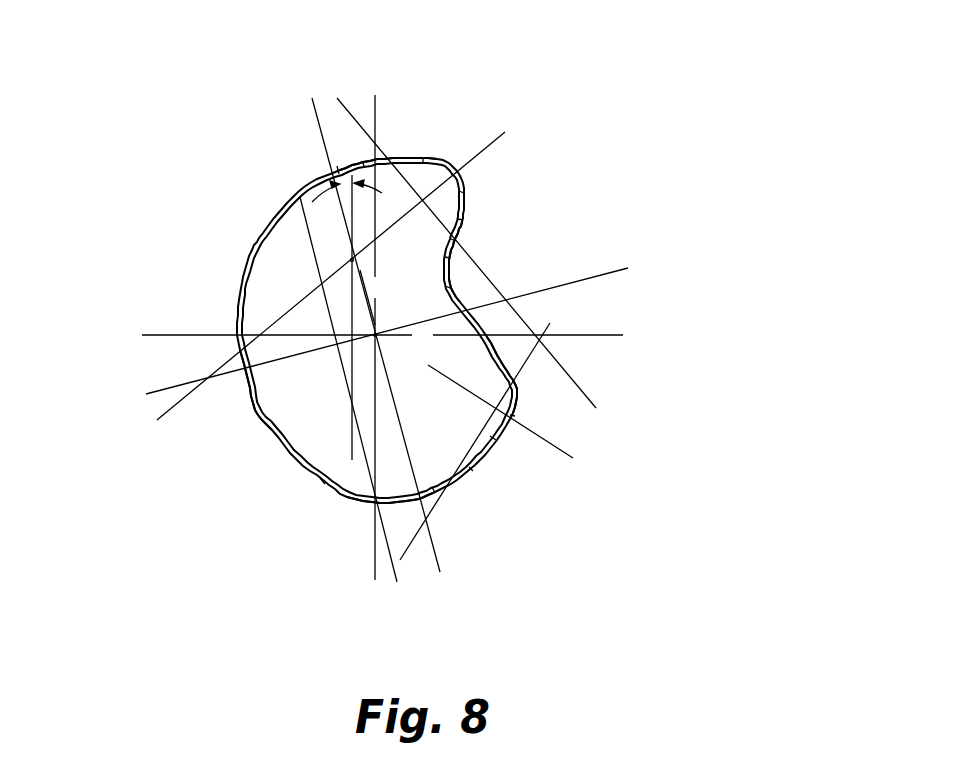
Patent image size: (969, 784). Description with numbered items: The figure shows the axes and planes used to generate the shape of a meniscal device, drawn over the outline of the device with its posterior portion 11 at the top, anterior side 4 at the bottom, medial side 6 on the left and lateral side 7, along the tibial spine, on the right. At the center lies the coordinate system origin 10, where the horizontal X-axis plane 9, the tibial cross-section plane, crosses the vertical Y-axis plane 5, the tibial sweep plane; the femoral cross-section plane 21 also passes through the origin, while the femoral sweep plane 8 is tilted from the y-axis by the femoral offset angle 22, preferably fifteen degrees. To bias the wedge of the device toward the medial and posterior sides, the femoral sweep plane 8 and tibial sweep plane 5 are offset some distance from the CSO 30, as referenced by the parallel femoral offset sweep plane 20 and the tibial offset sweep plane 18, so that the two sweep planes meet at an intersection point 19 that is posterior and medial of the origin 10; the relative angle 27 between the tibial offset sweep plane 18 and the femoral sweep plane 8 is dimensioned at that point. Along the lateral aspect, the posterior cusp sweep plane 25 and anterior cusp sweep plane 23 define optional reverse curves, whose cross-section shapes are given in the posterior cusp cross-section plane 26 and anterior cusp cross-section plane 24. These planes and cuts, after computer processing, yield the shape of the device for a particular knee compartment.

The anterior side 4 is at (405, 505).
The tibial sweep plane (y-axis) 5 is at (373, 573).
The medial side 6 is at (257, 408).
The lateral side 7 is at (505, 364).
The femoral sweep plane 8 is at (439, 571).
The X-axis plane 9 is at (604, 338).
The coordinate system origin (CSO) 10 is at (466, 311).
The posterior portion 11 is at (365, 157).
The tibial offset sweep plane 18 is at (351, 458).
The intersection point 19 is at (348, 260).
The femoral offset sweep plane 20 is at (397, 580).
The femoral cross-section plane 21 is at (605, 277).
The femoral offset angle 22 is at (367, 273).
The anterior cusp sweep plane 23 is at (550, 444).
The anterior cusp cross-section plane 24 is at (490, 438).
The posterior cusp sweep plane 25 is at (497, 139).
The posterior cusp cross-section plane 26 is at (412, 180).
The relative angle 27 is at (343, 173).
The CSO offset reference 30 is at (455, 284).